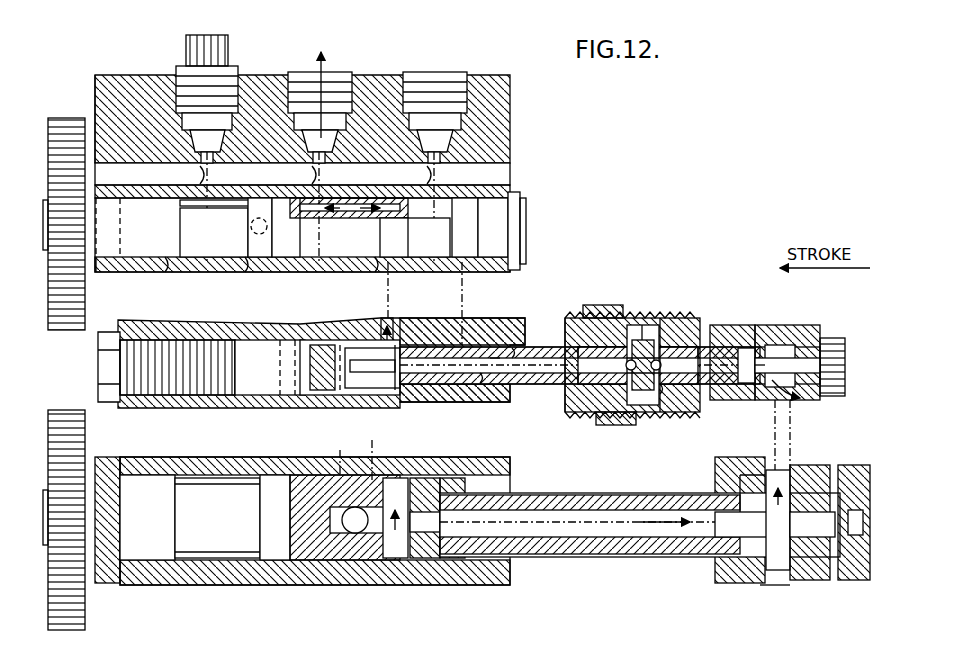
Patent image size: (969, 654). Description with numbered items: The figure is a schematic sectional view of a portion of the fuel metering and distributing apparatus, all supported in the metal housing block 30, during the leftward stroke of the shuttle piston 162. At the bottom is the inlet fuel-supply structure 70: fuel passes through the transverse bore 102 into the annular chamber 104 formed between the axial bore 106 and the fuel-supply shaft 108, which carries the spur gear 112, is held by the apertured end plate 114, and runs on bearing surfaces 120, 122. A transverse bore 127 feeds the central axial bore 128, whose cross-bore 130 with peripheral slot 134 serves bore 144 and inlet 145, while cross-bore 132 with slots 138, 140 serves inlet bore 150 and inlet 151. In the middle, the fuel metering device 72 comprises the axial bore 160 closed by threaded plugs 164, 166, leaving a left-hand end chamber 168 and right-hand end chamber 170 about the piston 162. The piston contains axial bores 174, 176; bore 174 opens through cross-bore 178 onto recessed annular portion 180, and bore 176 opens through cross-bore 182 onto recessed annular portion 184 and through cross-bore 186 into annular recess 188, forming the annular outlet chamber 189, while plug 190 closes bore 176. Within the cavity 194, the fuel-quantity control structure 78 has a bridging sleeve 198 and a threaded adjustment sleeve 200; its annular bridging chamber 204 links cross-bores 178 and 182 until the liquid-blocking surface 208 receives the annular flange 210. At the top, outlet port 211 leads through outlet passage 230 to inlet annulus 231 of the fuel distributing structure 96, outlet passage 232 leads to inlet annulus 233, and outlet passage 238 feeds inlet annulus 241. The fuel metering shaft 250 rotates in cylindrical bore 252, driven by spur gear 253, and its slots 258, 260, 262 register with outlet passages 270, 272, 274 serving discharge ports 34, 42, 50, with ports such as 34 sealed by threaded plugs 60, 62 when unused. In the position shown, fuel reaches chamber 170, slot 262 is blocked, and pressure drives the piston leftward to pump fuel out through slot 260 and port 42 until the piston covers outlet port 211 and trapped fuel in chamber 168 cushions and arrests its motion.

The metal housing block 30 is at (508, 178).
The fluid discharge port 34 is at (182, 68).
The fluid discharge port 42 is at (340, 75).
The fluid discharge port 50 is at (455, 75).
The threaded plug 60 is at (229, 645).
The threaded plug 62 is at (208, 36).
The inlet fuel-supply structure 70 is at (590, 552).
The fuel metering device 72 is at (538, 385).
The fuel-quantity control structure 78 is at (650, 325).
The fuel distributing structure 96 is at (120, 268).
The transverse bore 102 is at (405, 560).
The annular chamber 104 is at (420, 565).
The axial bore 106 is at (215, 560).
The fuel-supply shaft 108 is at (160, 525).
The spur gear 112 is at (64, 620).
The apertured end plate 114 is at (104, 76).
The bearing surface 120 is at (278, 478).
The bearing surface 122 is at (772, 582).
The transverse bore 127 is at (395, 508).
The central axial bore 128 is at (600, 530).
The cross-bore 130 is at (350, 533).
The cross-bore 132 is at (798, 475).
The peripheral slot 134 is at (379, 455).
The peripheral slot 138 is at (738, 478).
The peripheral slot 140 is at (845, 580).
The bore 144 is at (342, 460).
The inlet 145 is at (345, 392).
The inlet bore 150 is at (775, 470).
The inlet 151 is at (795, 400).
The axial bore 160 is at (335, 325).
The shuttle piston 162 is at (420, 345).
The threaded plug 164 is at (130, 365).
The threaded plug 166 is at (832, 362).
The left-hand end chamber 168 is at (375, 392).
The right-hand end chamber 170 is at (785, 350).
The axial bore 174 is at (755, 360).
The axial bore 176 is at (516, 350).
The cross-bore 178 is at (656, 372).
The recessed annular portion 180 is at (662, 325).
The cross-bore 182 is at (631, 372).
The recessed annular portion 184 is at (636, 340).
The cross-bore 186 is at (478, 384).
The annular recess 188 is at (400, 392).
The annular outlet chamber 189 is at (494, 385).
The plug 190 is at (402, 368).
The generally-rectangular cavity 194 is at (725, 325).
The bridging sleeve 198 is at (568, 320).
The threaded adjustment sleeve 200 is at (590, 306).
The annular bridging chamber 204 is at (600, 415).
The cylindrical liquid-blocking surface 208 is at (665, 395).
The annular flange 210 is at (643, 325).
The outlet port 211 is at (382, 318).
The outlet passage 230 is at (385, 285).
The inlet annulus 231 is at (380, 242).
The outlet passage 232 is at (465, 262).
The inlet annulus 233 is at (500, 248).
The outlet passage 238 is at (248, 232).
The inlet annulus 241 is at (250, 268).
The fuel metering shaft 250 is at (106, 210).
The cylindrical bore 252 is at (172, 268).
The spur gear 253 is at (60, 120).
The slot 258 is at (186, 208).
The slot 260 is at (280, 210).
The slot 262 is at (370, 227).
The outlet passage 270 is at (200, 176).
The outlet passage 272 is at (312, 176).
The outlet passage 274 is at (428, 176).